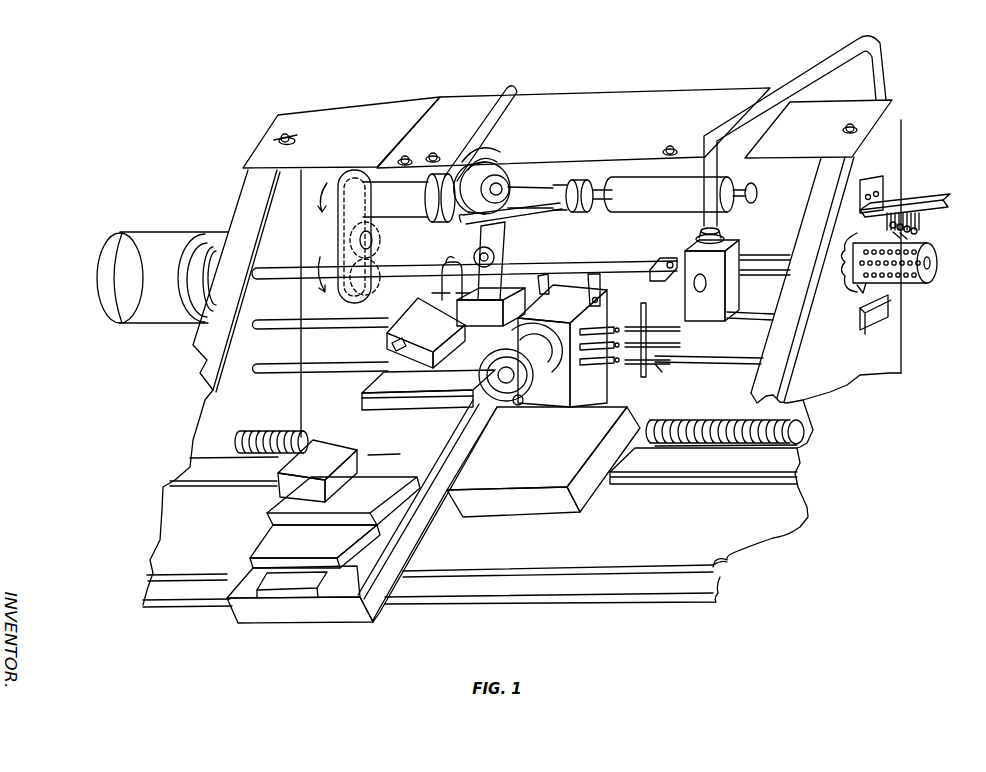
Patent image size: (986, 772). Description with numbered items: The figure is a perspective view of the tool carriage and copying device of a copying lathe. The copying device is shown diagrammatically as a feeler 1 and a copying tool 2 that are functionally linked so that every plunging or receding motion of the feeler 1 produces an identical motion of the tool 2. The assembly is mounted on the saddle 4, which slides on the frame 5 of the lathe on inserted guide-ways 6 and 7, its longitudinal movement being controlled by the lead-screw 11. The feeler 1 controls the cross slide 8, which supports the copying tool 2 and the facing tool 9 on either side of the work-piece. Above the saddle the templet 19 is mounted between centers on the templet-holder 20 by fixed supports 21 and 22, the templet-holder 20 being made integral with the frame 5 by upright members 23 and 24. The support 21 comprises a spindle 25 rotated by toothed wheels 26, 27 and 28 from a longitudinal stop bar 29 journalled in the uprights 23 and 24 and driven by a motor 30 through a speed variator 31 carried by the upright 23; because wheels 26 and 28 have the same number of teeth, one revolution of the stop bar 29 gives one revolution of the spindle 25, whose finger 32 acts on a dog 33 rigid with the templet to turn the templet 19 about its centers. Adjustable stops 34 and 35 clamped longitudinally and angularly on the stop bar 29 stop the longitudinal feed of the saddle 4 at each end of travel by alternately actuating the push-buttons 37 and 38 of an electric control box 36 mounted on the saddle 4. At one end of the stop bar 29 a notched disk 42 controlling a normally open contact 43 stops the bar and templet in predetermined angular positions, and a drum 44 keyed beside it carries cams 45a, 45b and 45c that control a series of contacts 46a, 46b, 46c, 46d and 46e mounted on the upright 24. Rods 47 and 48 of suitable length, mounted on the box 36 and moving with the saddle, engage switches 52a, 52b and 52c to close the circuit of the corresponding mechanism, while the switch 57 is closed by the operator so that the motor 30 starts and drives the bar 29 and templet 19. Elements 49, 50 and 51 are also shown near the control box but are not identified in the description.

The feeler 1 is at (506, 222).
The copying tool 2 is at (315, 436).
The saddle 4 is at (552, 506).
The frame 5 is at (793, 524).
The guide-way 6 is at (791, 459).
The guide-way 7 is at (703, 590).
The cross slide 8 is at (272, 549).
The facing tool 9 is at (391, 347).
The lead-screw 11 is at (757, 424).
The templet 19 is at (526, 194).
The templet-holder 20 is at (634, 101).
The fixed support 21 is at (511, 103).
The fixed support 22 is at (706, 103).
The upright member 23 is at (245, 170).
The upright member 24 is at (893, 127).
The spindle 25 is at (426, 197).
The toothed wheel 26 is at (358, 172).
The toothed wheel 27 is at (352, 240).
The toothed wheel 28 is at (355, 292).
The longitudinal stop bar 29 is at (402, 264).
The motor 30 is at (171, 235).
The speed variator 31 is at (226, 234).
The finger 32 is at (481, 153).
The dog 33 is at (486, 163).
The adjustable stop 34 is at (461, 259).
The adjustable stop 35 is at (657, 262).
The electric control box 36 is at (601, 403).
The push-button 37 is at (541, 273).
The push-button 38 is at (593, 262).
The notched disk 42 is at (858, 292).
The normally open contact 43 is at (860, 318).
The drum 44 is at (913, 278).
The cam 45a is at (931, 272).
The cam 45b is at (905, 288).
The cam 45c is at (902, 290).
The contact 46a is at (930, 206).
The contact 46b is at (921, 216).
The contact 46c is at (913, 232).
The contact 46d is at (913, 243).
The contact 46e is at (932, 255).
The rod 47 is at (642, 316).
The rod 48 is at (678, 349).
The wire 49 is at (657, 364).
The rod 50 is at (757, 300).
The rod 51 is at (741, 345).
The switch 52a is at (616, 362).
The switch 52b is at (622, 370).
The switch 52c is at (606, 372).
The switch 57 is at (695, 259).